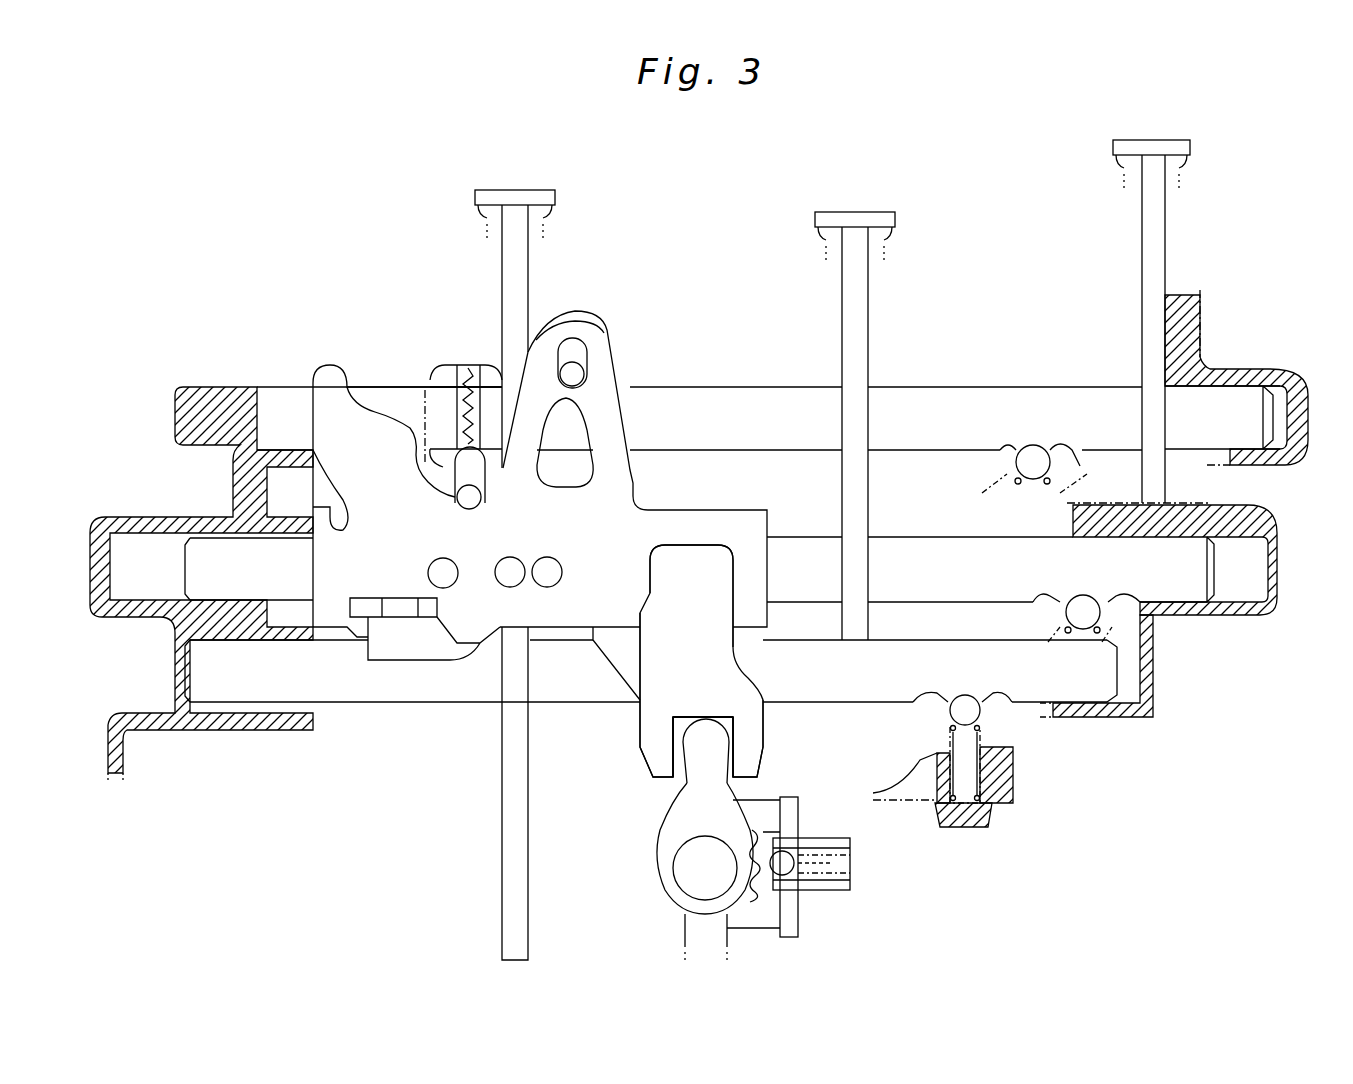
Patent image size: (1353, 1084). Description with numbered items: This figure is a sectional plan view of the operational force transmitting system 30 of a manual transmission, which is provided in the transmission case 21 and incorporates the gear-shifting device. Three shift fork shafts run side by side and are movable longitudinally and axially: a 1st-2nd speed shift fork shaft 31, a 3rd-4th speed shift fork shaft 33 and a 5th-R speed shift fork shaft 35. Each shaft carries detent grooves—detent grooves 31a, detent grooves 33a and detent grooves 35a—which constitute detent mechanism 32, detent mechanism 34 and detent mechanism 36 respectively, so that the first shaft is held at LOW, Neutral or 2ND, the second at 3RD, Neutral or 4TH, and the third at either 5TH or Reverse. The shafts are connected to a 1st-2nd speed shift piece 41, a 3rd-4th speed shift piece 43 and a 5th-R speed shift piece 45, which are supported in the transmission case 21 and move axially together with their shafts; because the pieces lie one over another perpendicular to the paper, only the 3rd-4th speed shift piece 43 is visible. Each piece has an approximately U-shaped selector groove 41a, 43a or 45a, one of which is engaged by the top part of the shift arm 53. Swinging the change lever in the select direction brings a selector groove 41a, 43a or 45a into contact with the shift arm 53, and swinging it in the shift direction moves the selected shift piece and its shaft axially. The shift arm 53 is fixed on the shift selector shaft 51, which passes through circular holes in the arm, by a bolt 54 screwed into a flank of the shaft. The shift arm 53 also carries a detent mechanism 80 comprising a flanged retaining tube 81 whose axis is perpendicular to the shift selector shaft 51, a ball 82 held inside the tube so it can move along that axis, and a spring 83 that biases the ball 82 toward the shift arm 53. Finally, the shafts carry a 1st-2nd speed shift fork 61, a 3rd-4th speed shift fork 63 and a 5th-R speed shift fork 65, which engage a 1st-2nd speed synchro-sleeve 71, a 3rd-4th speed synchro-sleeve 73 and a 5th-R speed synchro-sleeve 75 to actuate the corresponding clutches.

The transmission case 21 is at (185, 397).
The operational force transmitting system 30 is at (724, 208).
The 1st-2nd speed shift fork shaft 31 is at (918, 650).
The detent grooves 31a is at (925, 762).
The detent mechanism 32 is at (1000, 724).
The 3rd-4th speed shift fork shaft 33 is at (890, 552).
The detent grooves 33a is at (1050, 612).
The detent mechanism 34 is at (1145, 632).
The 5th-R speed shift fork shaft 35 is at (702, 392).
The detent grooves 35a is at (1070, 460).
The detent mechanism 36 is at (1013, 465).
The 1st-2nd speed shift piece 41 is at (664, 695).
The selector groove 41a is at (755, 741).
The 3rd-4th speed shift piece 43 is at (640, 720).
The selector groove 43a is at (760, 720).
The 5th-R speed shift piece 45 is at (649, 670).
The selector groove 45a is at (755, 756).
The shift selector shaft 51 is at (685, 860).
The shift arm 53 is at (678, 815).
The bolt 54 is at (694, 938).
The 1st-2nd speed shift fork 61 is at (518, 285).
The 3rd-4th speed shift fork 63 is at (857, 324).
The 5th-R speed shift fork 65 is at (1160, 268).
The 1st-2nd speed synchro-sleeve 71 is at (560, 197).
The 3rd-4th speed synchro-sleeve 73 is at (897, 219).
The 5th-R speed synchro-sleeve 75 is at (1192, 156).
The detent mechanism 80 is at (818, 867).
The flanged retaining tube 81 is at (852, 866).
The ball 82 is at (804, 890).
The spring 83 is at (812, 850).